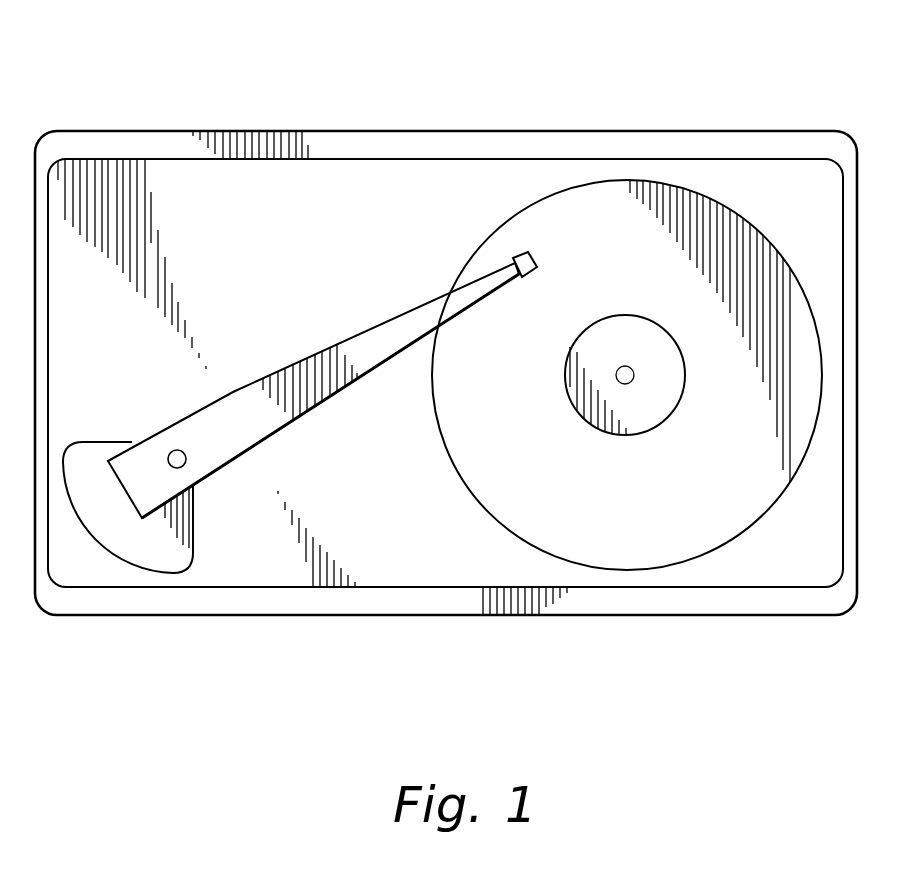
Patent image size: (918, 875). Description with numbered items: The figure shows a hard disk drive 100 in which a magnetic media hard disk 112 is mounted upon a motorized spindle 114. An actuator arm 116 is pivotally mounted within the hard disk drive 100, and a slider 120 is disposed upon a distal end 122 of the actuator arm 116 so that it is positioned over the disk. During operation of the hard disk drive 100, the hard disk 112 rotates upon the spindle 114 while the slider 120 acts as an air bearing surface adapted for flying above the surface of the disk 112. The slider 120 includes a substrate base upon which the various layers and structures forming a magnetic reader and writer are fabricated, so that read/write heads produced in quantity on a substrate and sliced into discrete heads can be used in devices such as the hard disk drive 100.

The hard disk drive 100 is at (696, 62).
The magnetic media hard disk 112 is at (487, 493).
The motorized spindle 114 is at (627, 327).
The actuator arm 116 is at (183, 420).
The slider 120 is at (539, 257).
The distal end 122 is at (390, 321).